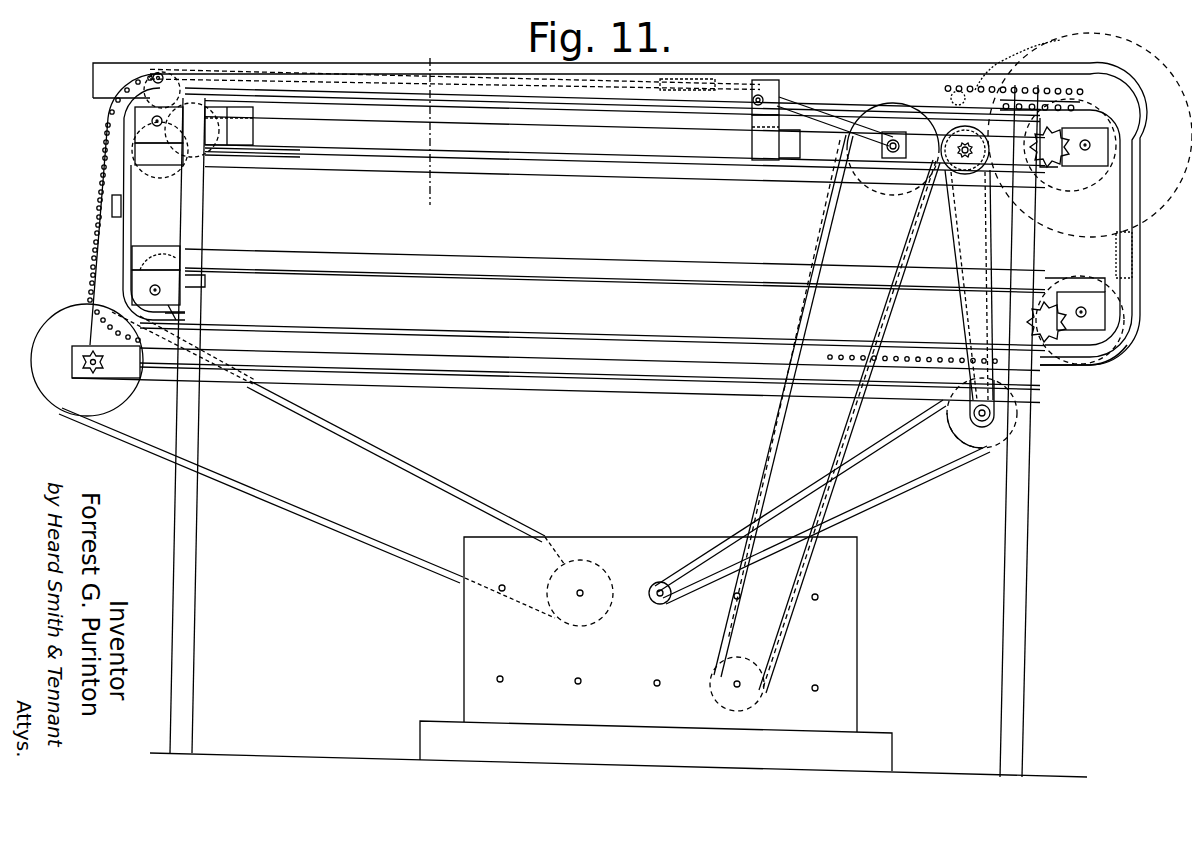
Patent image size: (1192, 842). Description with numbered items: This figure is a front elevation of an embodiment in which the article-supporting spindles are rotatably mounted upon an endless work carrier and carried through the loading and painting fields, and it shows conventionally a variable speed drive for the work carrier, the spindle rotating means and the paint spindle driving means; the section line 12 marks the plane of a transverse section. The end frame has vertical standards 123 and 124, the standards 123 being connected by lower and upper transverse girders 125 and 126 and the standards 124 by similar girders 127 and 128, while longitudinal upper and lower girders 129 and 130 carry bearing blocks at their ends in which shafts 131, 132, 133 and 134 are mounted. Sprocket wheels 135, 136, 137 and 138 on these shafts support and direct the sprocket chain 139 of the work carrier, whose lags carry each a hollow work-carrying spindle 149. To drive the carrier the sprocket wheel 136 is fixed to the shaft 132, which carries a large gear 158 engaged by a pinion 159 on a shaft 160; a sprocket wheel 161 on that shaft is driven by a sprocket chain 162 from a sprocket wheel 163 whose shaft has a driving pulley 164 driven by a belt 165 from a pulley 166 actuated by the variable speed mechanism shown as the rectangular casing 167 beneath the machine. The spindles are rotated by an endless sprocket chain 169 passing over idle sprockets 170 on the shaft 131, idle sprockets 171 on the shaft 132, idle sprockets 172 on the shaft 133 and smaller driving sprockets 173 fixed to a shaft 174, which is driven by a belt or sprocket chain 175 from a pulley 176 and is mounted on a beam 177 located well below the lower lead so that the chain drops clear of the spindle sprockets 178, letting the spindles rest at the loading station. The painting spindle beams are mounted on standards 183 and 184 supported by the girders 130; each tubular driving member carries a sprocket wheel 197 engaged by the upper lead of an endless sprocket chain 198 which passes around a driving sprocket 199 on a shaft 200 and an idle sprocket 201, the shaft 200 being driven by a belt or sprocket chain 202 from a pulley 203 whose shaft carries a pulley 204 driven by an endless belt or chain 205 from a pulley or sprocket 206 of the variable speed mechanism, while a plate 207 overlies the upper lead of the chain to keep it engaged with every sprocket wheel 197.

The section line 12- 12 is at (430, 126).
The vertical standards 123 is at (1018, 517).
The vertical standards 124 is at (200, 438).
The lower transverse girder 125 is at (1040, 350).
The upper transverse girder 126 is at (1050, 180).
The transverse girder 127 is at (208, 281).
The transverse girder 128 is at (218, 153).
The upper longitudinal girder 129 is at (462, 256).
The lower longitudinal girder 130 is at (473, 170).
The shaft 131 is at (152, 121).
The shaft 132 is at (1083, 147).
The shaft 133 is at (1087, 313).
The shaft 134 is at (155, 285).
The sprocket wheel 135 is at (205, 166).
The sprocket wheel 136 is at (1097, 118).
The sprocket wheel 137 is at (1092, 350).
The sprocket wheel 138 is at (172, 313).
The sprocket chain 139 is at (862, 100).
The hollow work-carrying spindle 149 is at (976, 90).
The large gear 158 is at (1138, 60).
The pinion 159 is at (956, 92).
The shaft 160 is at (965, 168).
The sprocket wheel 161 is at (952, 141).
The sprocket chain 162 is at (958, 244).
The sprocket wheel 163 is at (990, 418).
The driving pulley 164 is at (985, 446).
The belt 165 is at (900, 486).
The pulley 166 is at (660, 583).
The rectangular casing 167 is at (843, 617).
The endless sprocket chain 169 is at (100, 215).
The idle sprockets 170 is at (150, 175).
The idle sprockets 171 is at (1124, 170).
The idle sprockets 172 is at (1132, 286).
The driving sprockets 173 is at (95, 374).
The shaft 174 is at (86, 360).
The belt or sprocket chain 175 is at (112, 432).
The pulley 176 is at (592, 572).
The beam 177 is at (404, 388).
The sprockets 178 is at (1034, 95).
The standard 183 is at (241, 130).
The standard 184 is at (758, 142).
The sprocket wheel 197 is at (682, 84).
The endless sprocket chain 198 is at (745, 88).
The driving sprocket 199 is at (762, 97).
The shaft 200 is at (764, 101).
The idle sprocket 201 is at (158, 72).
The belt or sprocket chain 202 is at (846, 126).
The pulley 203 is at (892, 141).
The pulley 204 is at (893, 192).
The endless belt or chain 205 is at (830, 230).
The pulley or sprocket 206 is at (745, 666).
The plate 207 is at (506, 86).